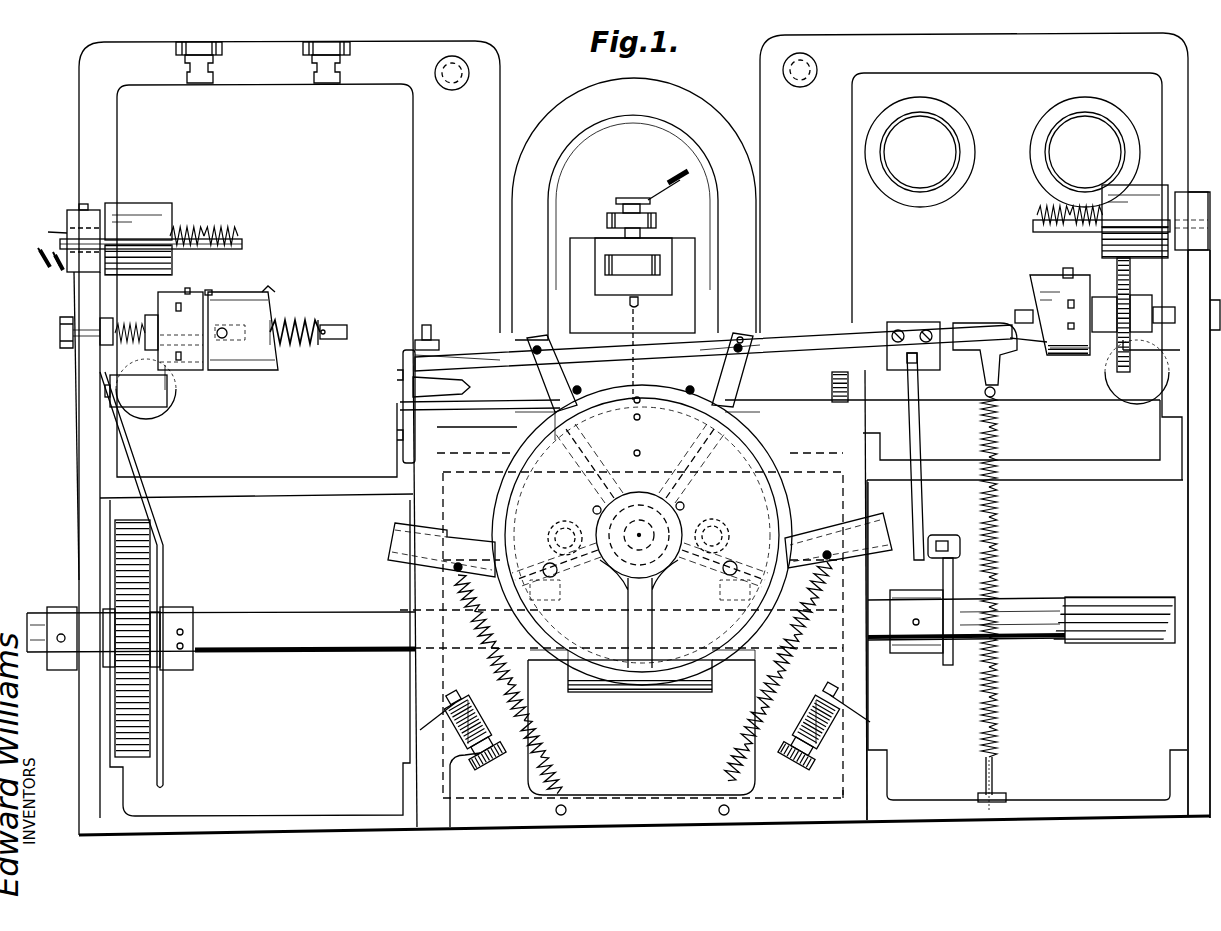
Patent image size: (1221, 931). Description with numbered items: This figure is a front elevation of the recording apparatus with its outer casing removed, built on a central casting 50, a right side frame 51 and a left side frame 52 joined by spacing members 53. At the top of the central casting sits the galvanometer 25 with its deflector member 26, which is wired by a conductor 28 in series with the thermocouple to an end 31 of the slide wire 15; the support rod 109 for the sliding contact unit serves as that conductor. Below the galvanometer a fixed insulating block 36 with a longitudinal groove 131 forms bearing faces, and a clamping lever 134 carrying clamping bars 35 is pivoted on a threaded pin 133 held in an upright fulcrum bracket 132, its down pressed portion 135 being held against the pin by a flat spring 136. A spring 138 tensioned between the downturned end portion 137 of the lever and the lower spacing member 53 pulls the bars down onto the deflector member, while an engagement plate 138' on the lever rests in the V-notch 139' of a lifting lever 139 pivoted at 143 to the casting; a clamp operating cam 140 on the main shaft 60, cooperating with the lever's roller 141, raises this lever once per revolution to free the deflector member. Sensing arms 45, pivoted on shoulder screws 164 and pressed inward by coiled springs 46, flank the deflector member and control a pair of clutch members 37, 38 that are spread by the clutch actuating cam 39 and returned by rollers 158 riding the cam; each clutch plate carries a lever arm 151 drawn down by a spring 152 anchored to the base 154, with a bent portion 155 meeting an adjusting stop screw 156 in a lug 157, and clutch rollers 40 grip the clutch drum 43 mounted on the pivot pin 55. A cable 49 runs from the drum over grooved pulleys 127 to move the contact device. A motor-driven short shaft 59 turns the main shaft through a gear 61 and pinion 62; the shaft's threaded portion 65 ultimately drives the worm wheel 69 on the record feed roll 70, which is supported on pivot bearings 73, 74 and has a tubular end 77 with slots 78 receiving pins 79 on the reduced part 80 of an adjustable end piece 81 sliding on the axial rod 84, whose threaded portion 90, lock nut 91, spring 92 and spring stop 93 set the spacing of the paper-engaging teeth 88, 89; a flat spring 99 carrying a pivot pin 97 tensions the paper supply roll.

The slide wire 15 is at (240, 228).
The galvanometer 25 is at (575, 143).
The deflector member 26 is at (628, 330).
The conductor 28 is at (58, 272).
The end of the resistance 31 is at (45, 240).
The clamping member 35 is at (760, 335).
The fixed block 36 is at (765, 345).
The clutch member 37 is at (570, 620).
The clutch member 38 is at (700, 615).
The clutch actuating cam 39 is at (580, 695).
The roller 40 is at (700, 455).
The clutch drum 43 is at (778, 492).
The sensing arms 45 is at (515, 438).
The springs 46 is at (745, 522).
The cable 49 is at (518, 345).
The central casting 50 is at (870, 684).
The right side frame 51 is at (1185, 663).
The left side frame 52 is at (76, 502).
The spacing members 53 is at (282, 820).
The pivot pin 55 is at (640, 525).
The short shaft 59 is at (35, 620).
The main shaft 60 is at (302, 620).
The gear 61 is at (160, 680).
The pinion 62 is at (148, 521).
The threaded portion 65 is at (1120, 598).
The worm wheel 69 is at (1110, 275).
The record feed roll 70 is at (1035, 278).
The pivot bearing 73 is at (1172, 308).
The pivot bearing 74 is at (137, 303).
The tubular end 77 is at (234, 292).
The slots 78 is at (270, 300).
The pins 79 is at (228, 330).
The reduced part 80 is at (210, 290).
The adjustable end piece 81 is at (172, 296).
The axial rod 84 is at (338, 325).
The teeth 88 is at (1072, 264).
The teeth 89 is at (180, 375).
The threaded portion 90 is at (150, 345).
The lock nut 91 is at (152, 320).
The spring 92 is at (302, 322).
The spring stop 93 is at (320, 318).
The pivot pin 97 is at (200, 662).
The flat spring 99 is at (163, 712).
The rod 109 is at (245, 247).
The grooved pulleys 127 is at (143, 420).
The longitudinal groove 131 is at (688, 330).
The fulcrum bracket 132 is at (448, 330).
The threaded pin 133 is at (420, 328).
The clamping lever 134 is at (466, 340).
The down pressed portion 135 is at (398, 368).
The flat spring 136 is at (480, 402).
The downturned outer end portion 137 is at (1005, 375).
The spring 138 is at (1013, 604).
The engagement plate 138' is at (939, 331).
The lifting lever 139 is at (937, 456).
The V-notch 139' is at (940, 371).
The clamp operating cam 140 is at (968, 611).
The block 141 is at (948, 534).
The pivot 143 is at (830, 380).
The lever arm 151 is at (478, 512).
The spring 152 is at (556, 770).
The base 154 is at (666, 793).
The rearwardly bent portion 155 is at (388, 570).
The adjusting stop screw 156 is at (463, 692).
The lug 157 is at (490, 722).
The roller 158 is at (560, 687).
The shoulder screws 164 is at (714, 522).